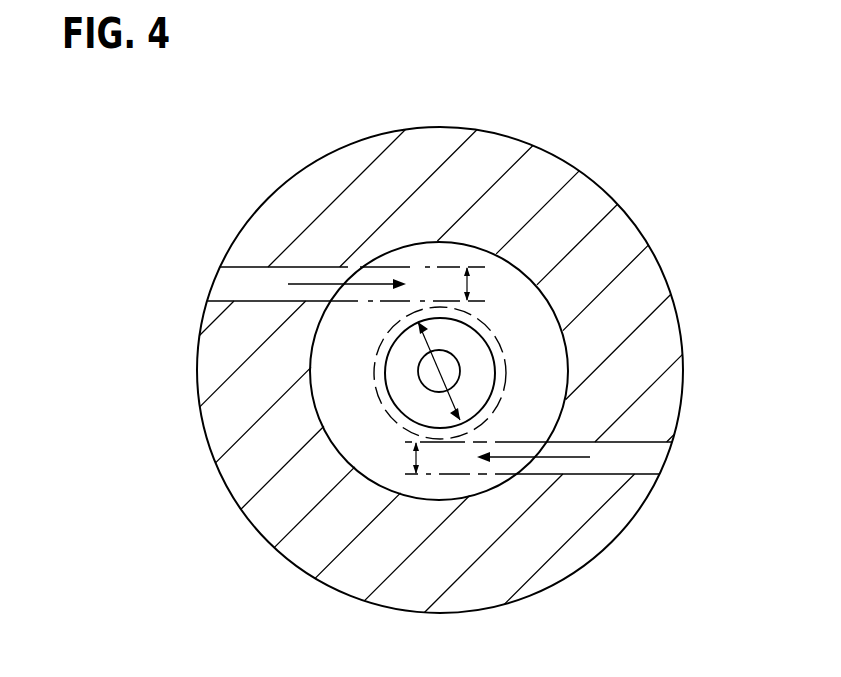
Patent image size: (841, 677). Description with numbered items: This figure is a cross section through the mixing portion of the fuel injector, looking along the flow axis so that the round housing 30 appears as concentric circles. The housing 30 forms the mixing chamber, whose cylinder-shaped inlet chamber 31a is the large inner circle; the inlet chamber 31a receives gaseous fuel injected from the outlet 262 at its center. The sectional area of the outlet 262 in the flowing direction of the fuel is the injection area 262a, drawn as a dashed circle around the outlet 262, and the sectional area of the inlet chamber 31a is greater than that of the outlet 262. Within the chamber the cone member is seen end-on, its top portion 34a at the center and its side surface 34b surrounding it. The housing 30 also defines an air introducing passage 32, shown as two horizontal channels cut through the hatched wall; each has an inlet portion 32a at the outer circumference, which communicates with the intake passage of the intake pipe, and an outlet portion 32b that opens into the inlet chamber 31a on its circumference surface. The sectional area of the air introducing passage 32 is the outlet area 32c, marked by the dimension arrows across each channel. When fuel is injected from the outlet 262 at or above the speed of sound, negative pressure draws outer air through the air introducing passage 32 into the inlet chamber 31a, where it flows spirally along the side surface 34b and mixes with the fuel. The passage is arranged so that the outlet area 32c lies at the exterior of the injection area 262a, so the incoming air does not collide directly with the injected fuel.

The housing 30 is at (213, 458).
The inlet chamber 31a is at (343, 400).
The air introducing passage 32 is at (258, 283).
The inlet portion 32a is at (213, 284).
The outlet portion 32b is at (347, 282).
The outlet area 32c is at (470, 287).
The outlet 262 is at (455, 400).
The injection area 262a is at (482, 345).
The top portion 34a is at (433, 380).
The side surface 34b is at (412, 397).